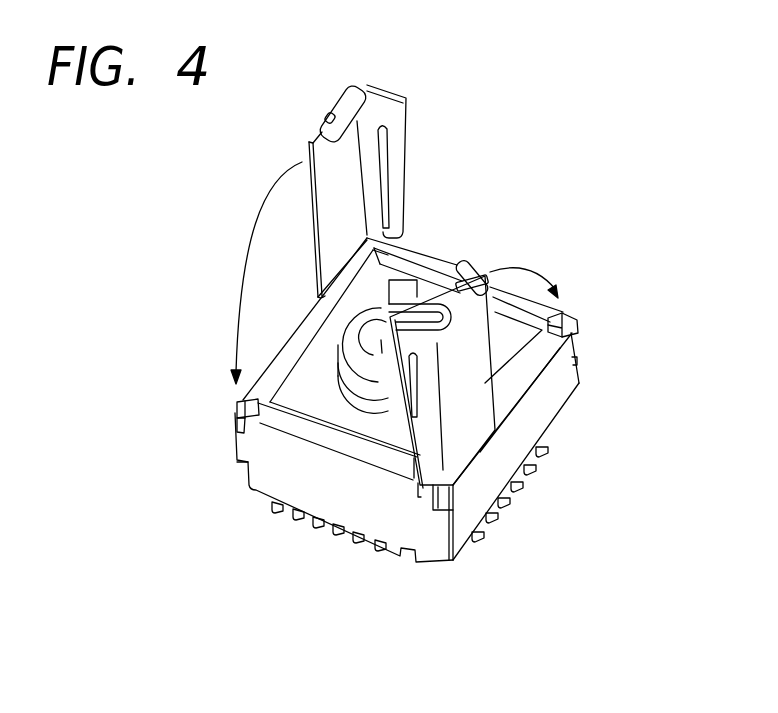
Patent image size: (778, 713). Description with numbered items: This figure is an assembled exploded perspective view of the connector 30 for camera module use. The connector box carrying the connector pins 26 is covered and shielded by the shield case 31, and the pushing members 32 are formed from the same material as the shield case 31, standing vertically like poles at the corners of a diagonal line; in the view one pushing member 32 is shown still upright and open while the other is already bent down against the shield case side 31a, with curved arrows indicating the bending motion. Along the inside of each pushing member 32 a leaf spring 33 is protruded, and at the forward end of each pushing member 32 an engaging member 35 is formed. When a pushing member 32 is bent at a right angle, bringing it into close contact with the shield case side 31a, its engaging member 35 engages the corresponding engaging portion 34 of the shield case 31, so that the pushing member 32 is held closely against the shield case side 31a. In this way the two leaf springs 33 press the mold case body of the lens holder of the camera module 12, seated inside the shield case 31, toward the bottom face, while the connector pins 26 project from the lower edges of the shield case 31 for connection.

The camera module 12 is at (382, 325).
The connector pins 26 is at (317, 527).
The connector for camera module use 30 is at (407, 80).
The shield case 31 is at (415, 513).
The shield case side 31a is at (532, 424).
The pushing member 32 is at (328, 170).
The leaf spring 33 is at (397, 155).
The engaging portion 34 is at (579, 330).
The engaging member 35 is at (355, 103).